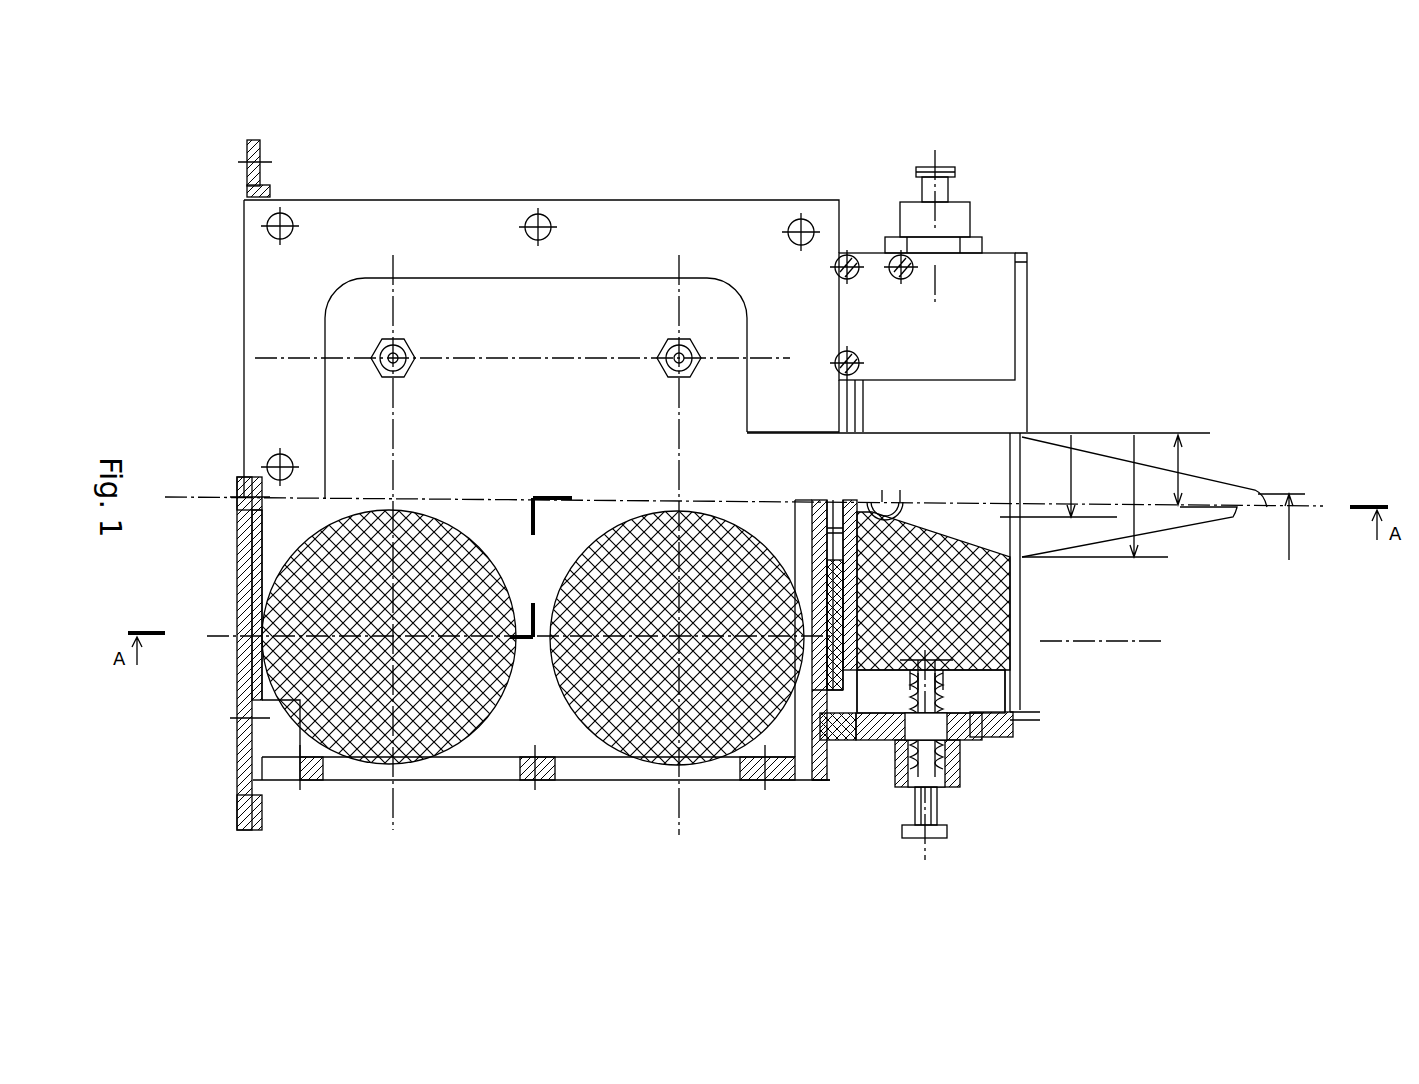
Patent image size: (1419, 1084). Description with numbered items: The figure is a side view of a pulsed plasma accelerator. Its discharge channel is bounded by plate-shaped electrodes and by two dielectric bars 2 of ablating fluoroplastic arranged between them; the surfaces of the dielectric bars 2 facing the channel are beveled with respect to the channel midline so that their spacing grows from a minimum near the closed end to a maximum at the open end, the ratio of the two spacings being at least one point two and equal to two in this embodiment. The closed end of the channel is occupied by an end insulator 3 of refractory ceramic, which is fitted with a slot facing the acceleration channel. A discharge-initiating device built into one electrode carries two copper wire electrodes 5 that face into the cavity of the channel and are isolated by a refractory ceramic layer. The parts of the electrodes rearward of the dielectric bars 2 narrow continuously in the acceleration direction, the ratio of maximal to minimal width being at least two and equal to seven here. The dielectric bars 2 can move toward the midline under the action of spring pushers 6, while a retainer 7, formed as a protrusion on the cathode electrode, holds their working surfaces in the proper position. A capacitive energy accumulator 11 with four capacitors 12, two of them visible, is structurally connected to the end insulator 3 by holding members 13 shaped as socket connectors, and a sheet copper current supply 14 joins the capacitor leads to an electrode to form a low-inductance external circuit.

The dielectric bars 2 is at (1020, 643).
The end insulator 3 is at (790, 745).
The electrodes of copper wire 5 is at (1153, 308).
The spring pushers 6 is at (1153, 123).
The retainer 7 is at (1153, 375).
The capacitive energy accumulator 11 is at (767, 119).
The capacitors 12 is at (430, 740).
The holding members 13 is at (1153, 243).
The current supply 14 is at (572, 118).